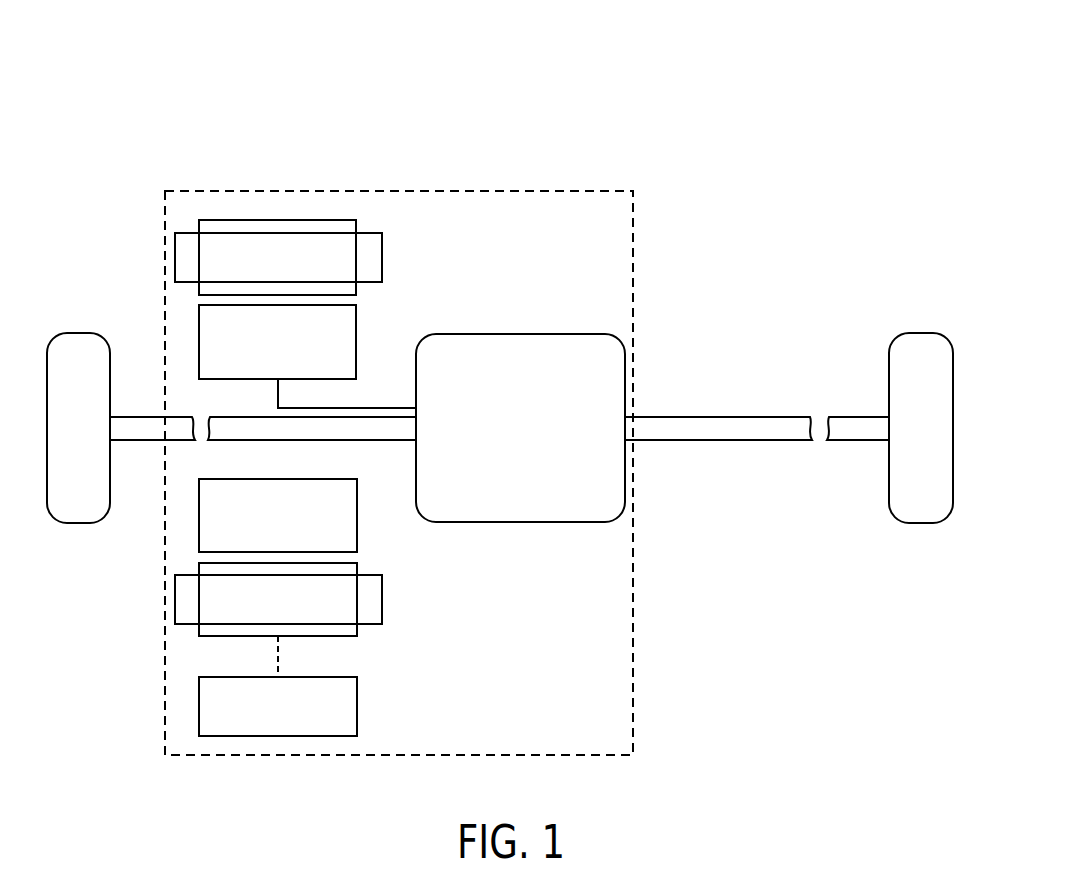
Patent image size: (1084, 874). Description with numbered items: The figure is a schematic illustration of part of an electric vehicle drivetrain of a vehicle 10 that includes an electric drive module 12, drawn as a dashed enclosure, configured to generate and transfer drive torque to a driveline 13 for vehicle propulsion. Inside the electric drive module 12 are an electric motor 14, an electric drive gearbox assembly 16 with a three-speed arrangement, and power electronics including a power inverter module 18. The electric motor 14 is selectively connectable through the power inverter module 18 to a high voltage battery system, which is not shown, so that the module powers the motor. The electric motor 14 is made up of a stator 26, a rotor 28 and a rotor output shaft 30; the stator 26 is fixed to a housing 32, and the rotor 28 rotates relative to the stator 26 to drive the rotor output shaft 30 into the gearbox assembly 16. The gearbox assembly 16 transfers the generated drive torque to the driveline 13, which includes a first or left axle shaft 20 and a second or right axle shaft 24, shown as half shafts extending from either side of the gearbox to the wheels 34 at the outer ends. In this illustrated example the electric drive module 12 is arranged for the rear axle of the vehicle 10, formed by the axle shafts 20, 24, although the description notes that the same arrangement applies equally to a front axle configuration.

The vehicle 10 is at (700, 88).
The electric drive module 12 is at (273, 165).
The driveline 13 is at (679, 382).
The electric motor 14 is at (392, 290).
The electric drive gearbox assembly 16 is at (520, 333).
The power inverter module 18 is at (357, 708).
The first axle shaft 20 is at (150, 430).
The second axle shaft 24 is at (752, 432).
The stator 26 is at (266, 611).
The rotor 28 is at (266, 531).
The rotor output shaft 30 is at (398, 406).
The housing 32 is at (342, 230).
The wheels 34 is at (66, 442).